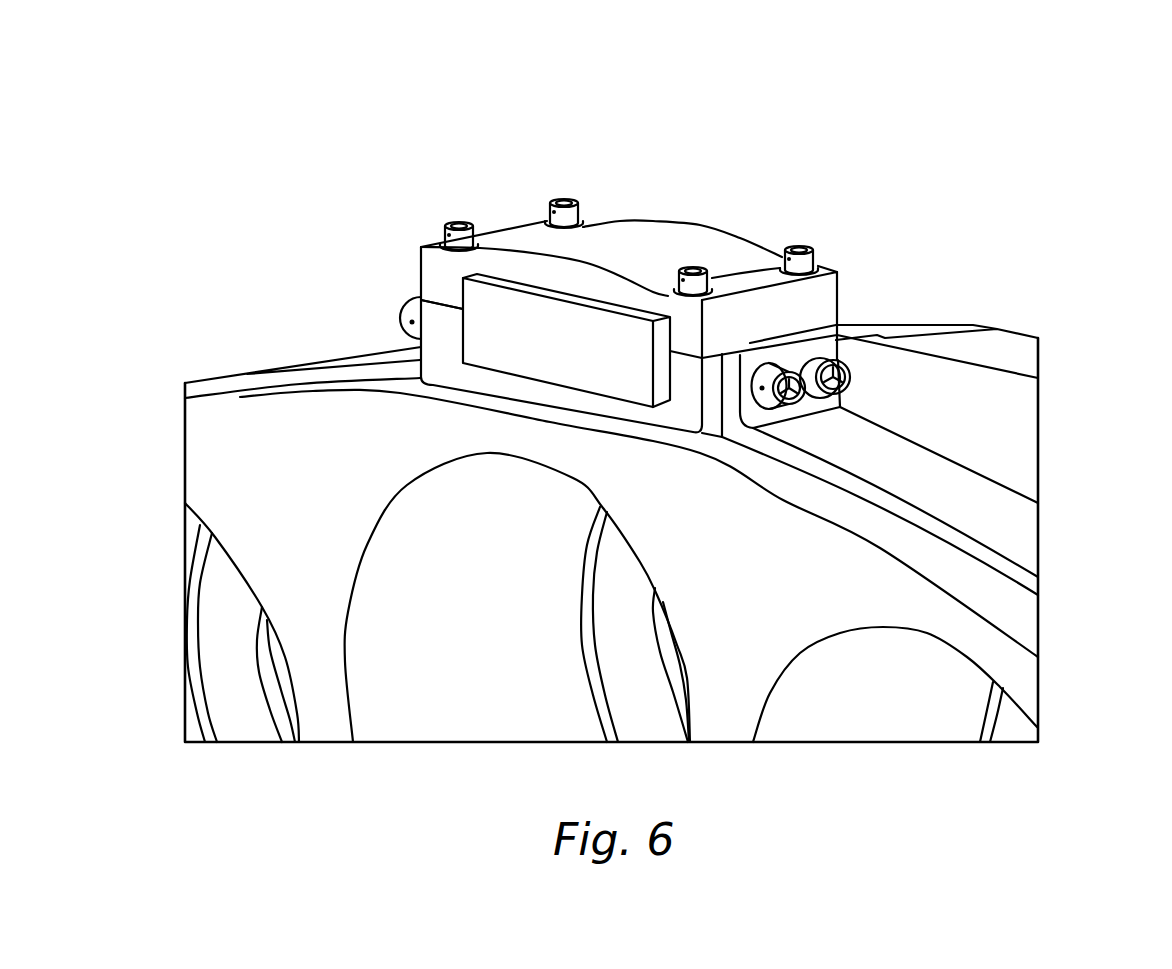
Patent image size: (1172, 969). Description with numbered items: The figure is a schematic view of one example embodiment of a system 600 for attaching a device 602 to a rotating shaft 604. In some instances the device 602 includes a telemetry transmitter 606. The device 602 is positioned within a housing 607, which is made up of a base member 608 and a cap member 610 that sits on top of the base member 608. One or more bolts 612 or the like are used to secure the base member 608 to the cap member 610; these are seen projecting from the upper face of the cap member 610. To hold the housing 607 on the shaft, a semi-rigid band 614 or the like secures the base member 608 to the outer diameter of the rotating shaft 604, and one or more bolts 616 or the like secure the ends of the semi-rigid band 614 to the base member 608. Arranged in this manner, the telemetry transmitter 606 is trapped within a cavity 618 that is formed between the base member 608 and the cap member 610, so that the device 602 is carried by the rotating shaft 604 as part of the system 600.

The system 600 is at (1088, 58).
The device 602 is at (631, 390).
The rotating shaft 604 is at (899, 323).
The telemetry transmitter 606 is at (472, 354).
The housing 607 is at (655, 320).
The base member 608 is at (685, 425).
The cap member 610 is at (636, 230).
The bolts 612 is at (784, 264).
The semi-rigid band 614 is at (915, 465).
The bolts 616 is at (857, 381).
The cavity 618 is at (566, 386).